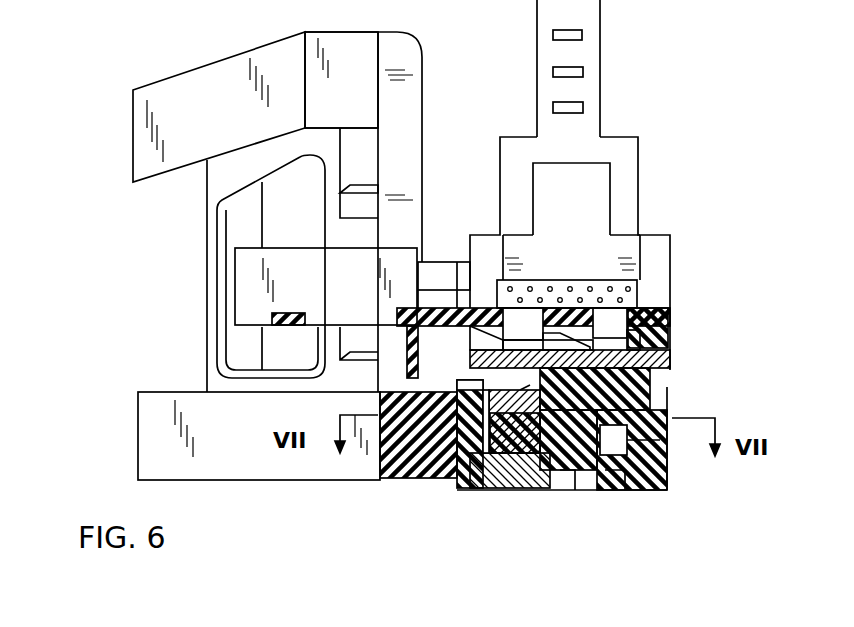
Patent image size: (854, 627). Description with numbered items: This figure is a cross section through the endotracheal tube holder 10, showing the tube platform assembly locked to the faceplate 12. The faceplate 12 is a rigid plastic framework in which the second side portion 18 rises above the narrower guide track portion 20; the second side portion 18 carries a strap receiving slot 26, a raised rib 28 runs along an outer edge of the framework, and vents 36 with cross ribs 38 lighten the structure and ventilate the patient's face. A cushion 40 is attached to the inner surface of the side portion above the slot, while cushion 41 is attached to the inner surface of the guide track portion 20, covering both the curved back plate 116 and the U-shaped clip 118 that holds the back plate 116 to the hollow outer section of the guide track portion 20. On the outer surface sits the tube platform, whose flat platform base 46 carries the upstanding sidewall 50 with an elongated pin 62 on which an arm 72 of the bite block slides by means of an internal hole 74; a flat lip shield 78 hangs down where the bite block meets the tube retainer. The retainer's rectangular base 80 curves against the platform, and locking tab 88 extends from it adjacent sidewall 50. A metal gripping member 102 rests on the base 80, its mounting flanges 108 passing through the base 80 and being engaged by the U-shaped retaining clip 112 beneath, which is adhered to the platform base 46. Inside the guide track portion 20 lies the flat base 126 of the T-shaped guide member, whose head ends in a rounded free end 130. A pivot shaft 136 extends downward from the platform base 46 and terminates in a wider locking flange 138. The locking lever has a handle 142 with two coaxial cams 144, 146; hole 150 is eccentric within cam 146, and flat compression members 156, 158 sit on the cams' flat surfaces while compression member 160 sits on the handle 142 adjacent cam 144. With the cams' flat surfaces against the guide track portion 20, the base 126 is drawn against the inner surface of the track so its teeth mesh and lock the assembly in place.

The endotracheal tube holder 10 is at (88, 174).
The faceplate 12 is at (343, 22).
The second side portion 18 is at (425, 55).
The guide track portion 20 is at (505, 490).
The strap receiving slot 26 is at (296, 196).
The raised rib 28 is at (247, 223).
The vents 36 is at (358, 160).
The cross ribs 38 is at (370, 188).
The cushion 40 is at (183, 73).
The cushion 41 is at (390, 483).
The platform base 46 is at (668, 347).
The sidewall 50 is at (672, 240).
The elongated pin 62 is at (437, 262).
The arm 72 is at (253, 277).
The hole 74 is at (290, 313).
The lip shield 78 is at (400, 353).
The base 80 is at (457, 280).
The locking tab 88 is at (603, 55).
The gripping member 102 is at (577, 290).
The mounting flanges 108 is at (620, 300).
The retaining clip 112 is at (672, 330).
The back plate 116 is at (443, 487).
The clip 118 is at (463, 493).
The base 126 is at (480, 493).
The free end 130 is at (627, 487).
The pivot shaft 136 is at (660, 440).
The locking flange 138 is at (567, 503).
The handle 142 is at (677, 405).
The cam 144 is at (655, 400).
The cam 146 is at (613, 500).
The hole 150 is at (553, 503).
The compression member 156 is at (520, 390).
The compression member 158 is at (527, 500).
The compression member 160 is at (660, 378).